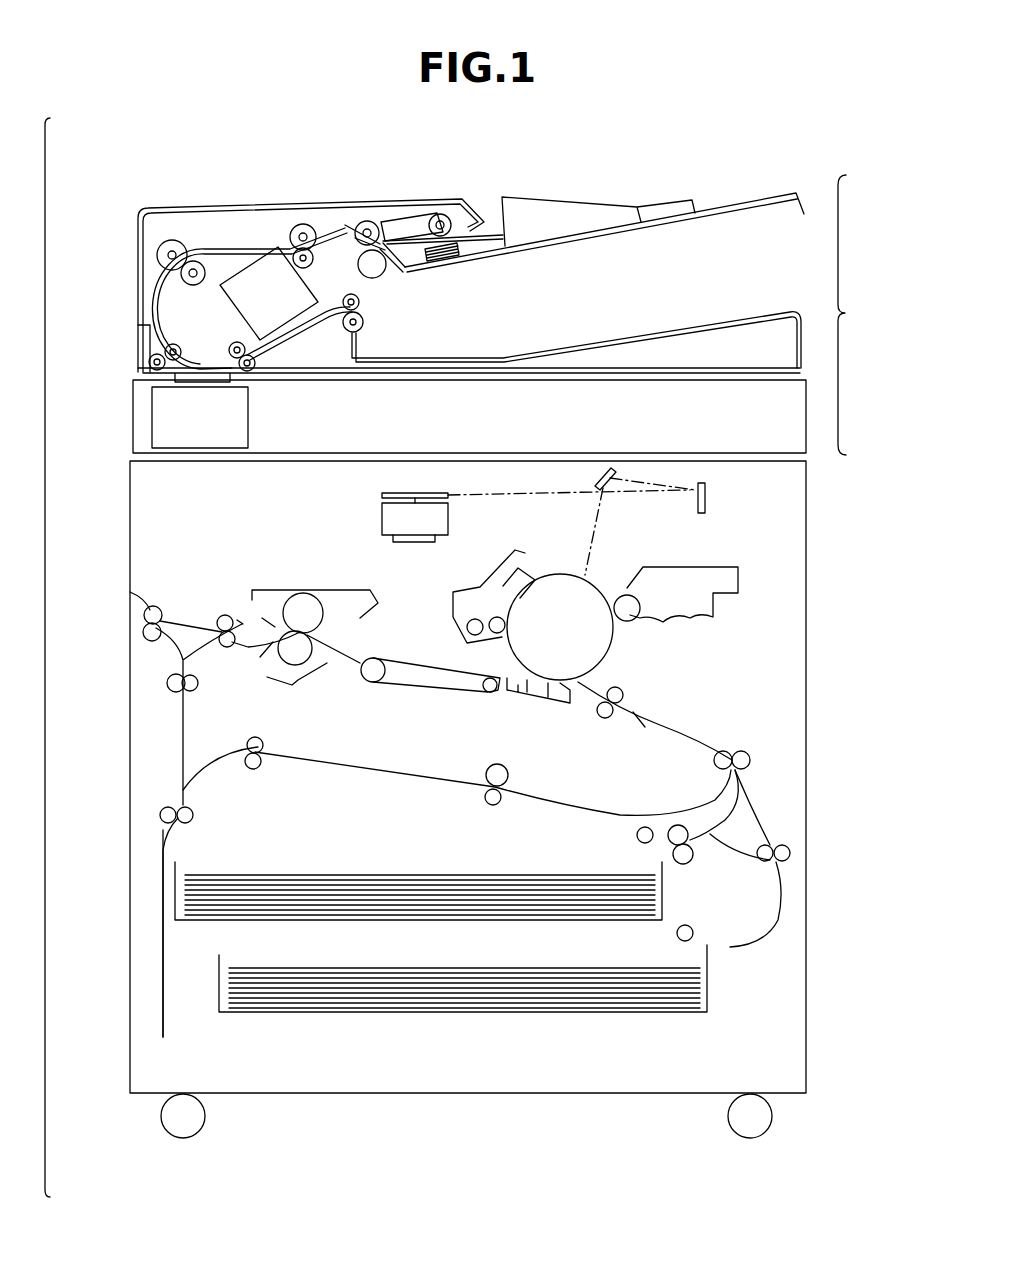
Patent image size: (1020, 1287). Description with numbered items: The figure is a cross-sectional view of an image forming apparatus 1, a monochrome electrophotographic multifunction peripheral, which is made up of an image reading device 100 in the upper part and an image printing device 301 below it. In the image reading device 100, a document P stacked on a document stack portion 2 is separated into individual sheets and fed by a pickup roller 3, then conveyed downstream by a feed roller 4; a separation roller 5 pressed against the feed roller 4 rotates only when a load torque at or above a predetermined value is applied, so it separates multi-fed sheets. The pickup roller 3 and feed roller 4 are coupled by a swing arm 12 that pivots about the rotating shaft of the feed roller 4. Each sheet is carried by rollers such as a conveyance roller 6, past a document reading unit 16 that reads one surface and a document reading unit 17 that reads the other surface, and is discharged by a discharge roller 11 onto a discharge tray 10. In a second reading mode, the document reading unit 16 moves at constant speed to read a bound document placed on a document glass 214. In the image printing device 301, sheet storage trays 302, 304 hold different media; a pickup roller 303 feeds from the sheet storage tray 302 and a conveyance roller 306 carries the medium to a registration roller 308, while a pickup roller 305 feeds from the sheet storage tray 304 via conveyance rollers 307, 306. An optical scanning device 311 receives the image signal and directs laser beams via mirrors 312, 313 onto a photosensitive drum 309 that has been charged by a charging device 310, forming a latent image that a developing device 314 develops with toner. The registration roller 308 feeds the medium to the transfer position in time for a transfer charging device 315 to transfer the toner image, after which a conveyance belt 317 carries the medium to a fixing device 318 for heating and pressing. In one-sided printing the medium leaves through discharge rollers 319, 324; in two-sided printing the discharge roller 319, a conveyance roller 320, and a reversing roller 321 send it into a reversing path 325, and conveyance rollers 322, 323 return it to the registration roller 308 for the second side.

The image forming apparatus 1 is at (45, 657).
The document stack portion 2 is at (724, 198).
The pickup roller 3 is at (440, 214).
The feed roller 4 is at (367, 221).
The separation roller 5 is at (378, 266).
The conveyance roller 6 is at (303, 224).
The discharge tray 10 is at (683, 332).
The discharge roller 11 is at (362, 324).
The swing arm 12 is at (404, 224).
The document reading unit 16 is at (152, 426).
The document reading unit 17 is at (270, 283).
The image reading device 100 is at (486, 301).
The document glass 214 is at (665, 382).
The image printing device 301 is at (822, 503).
The sheet storage tray 302 is at (665, 902).
The pickup roller 303 is at (637, 836).
The sheet storage tray 304 is at (707, 990).
The pickup roller 305 is at (676, 935).
The conveyance roller 306 is at (733, 751).
The conveyance roller 307 is at (757, 862).
The registration roller 308 is at (620, 692).
The photosensitive drum 309 is at (607, 582).
The charging device 310 is at (520, 578).
The optical scanning device 311 is at (384, 520).
The mirror 312 is at (706, 497).
The mirror 313 is at (595, 480).
The developing device 314 is at (692, 567).
The transfer charging device 315 is at (538, 702).
The conveyance belt 317 is at (396, 688).
The fixing device 318 is at (330, 590).
The discharge roller 319 is at (231, 615).
The conveyance roller 320 is at (198, 683).
The reversing roller 321 is at (193, 820).
The conveyance roller 322 is at (258, 768).
The conveyance roller 323 is at (493, 765).
The discharge roller 324 is at (145, 612).
The reversing path 325 is at (163, 838).
The document P is at (495, 246).